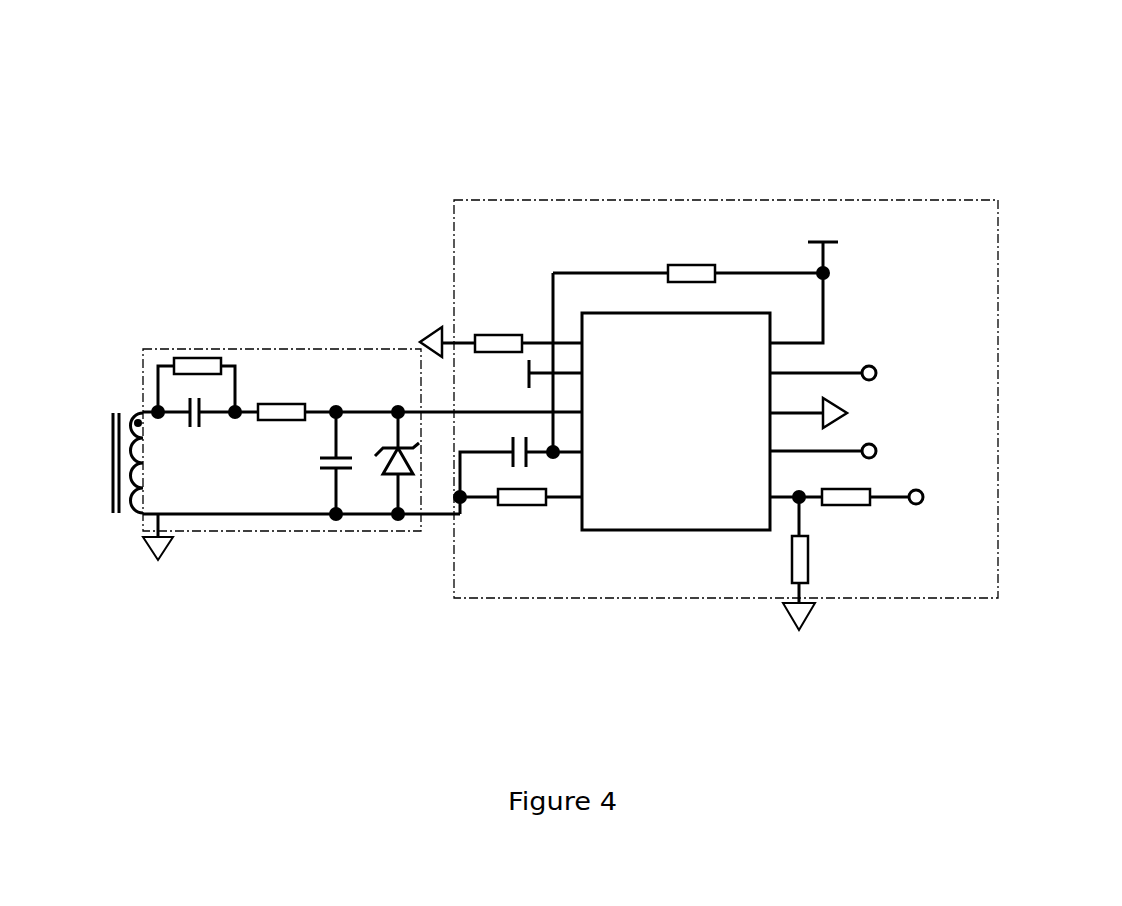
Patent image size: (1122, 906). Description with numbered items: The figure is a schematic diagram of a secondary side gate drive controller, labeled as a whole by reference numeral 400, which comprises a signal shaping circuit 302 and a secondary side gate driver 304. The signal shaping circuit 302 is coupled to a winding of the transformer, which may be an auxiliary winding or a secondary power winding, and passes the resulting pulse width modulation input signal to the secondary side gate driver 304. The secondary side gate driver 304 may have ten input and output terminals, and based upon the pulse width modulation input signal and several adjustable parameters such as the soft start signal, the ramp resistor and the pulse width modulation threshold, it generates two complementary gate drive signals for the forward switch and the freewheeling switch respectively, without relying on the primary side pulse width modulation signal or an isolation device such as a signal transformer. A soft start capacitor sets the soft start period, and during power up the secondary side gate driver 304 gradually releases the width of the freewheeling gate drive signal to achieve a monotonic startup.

The power converter circuit 400 is at (1001, 112).
The signal shaping circuit 302 is at (283, 532).
The secondary side gate driver 304 is at (645, 600).